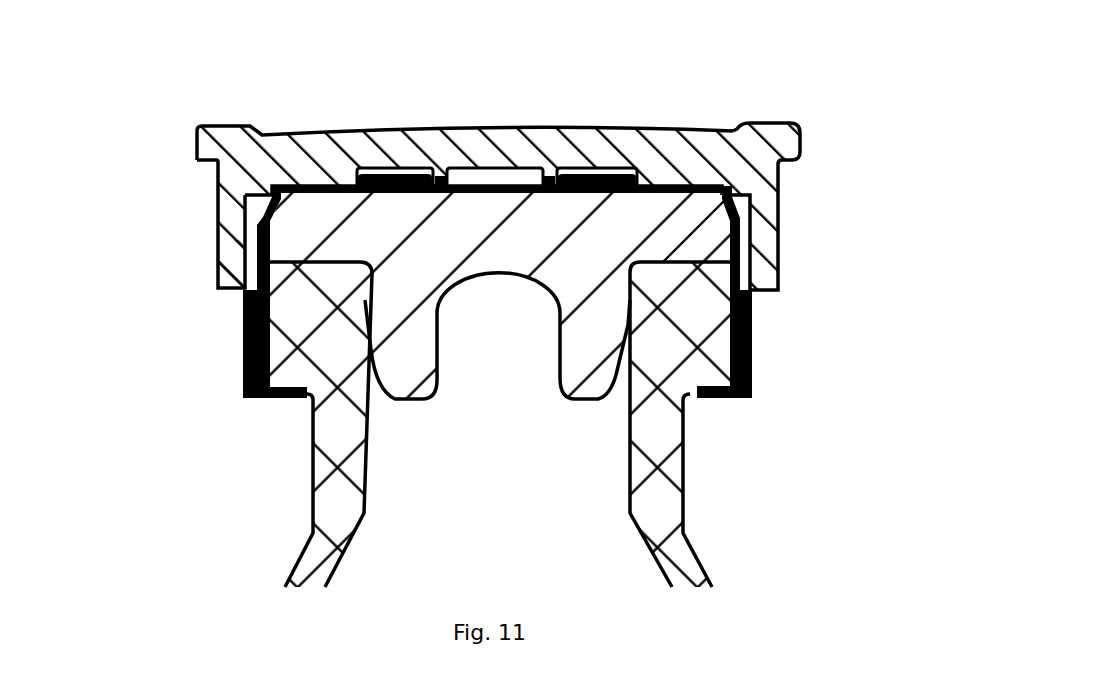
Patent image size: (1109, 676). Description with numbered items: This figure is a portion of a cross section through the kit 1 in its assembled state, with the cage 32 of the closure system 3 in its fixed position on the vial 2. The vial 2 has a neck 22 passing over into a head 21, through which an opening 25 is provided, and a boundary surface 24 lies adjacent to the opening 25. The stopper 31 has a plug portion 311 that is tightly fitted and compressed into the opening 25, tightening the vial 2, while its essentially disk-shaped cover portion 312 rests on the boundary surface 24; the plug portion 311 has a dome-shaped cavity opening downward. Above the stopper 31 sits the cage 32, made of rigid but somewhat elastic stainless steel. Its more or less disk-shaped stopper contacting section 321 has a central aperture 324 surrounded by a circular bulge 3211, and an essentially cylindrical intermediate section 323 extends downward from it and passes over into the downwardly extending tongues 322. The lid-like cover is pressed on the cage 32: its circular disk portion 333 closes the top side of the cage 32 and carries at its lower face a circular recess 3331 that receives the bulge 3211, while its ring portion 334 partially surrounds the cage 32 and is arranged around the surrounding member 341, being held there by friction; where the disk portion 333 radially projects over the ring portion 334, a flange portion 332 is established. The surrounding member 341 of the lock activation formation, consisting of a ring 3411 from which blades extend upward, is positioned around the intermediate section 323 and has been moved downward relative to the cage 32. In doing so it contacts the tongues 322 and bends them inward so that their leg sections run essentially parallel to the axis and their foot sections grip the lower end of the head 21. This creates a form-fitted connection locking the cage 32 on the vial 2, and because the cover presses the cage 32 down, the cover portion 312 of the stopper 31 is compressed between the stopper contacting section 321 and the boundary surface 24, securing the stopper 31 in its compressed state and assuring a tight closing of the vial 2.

The kit 1 is at (196, 385).
The vial 2 is at (295, 530).
The head 21 is at (312, 370).
The neck 22 is at (662, 502).
The boundary surface 24 is at (226, 255).
The opening 25 is at (590, 360).
The closure system 3 is at (321, 117).
The stopper 31 is at (513, 428).
The plug portion 311 is at (517, 350).
The cover portion 312 is at (700, 224).
The cage 32 is at (744, 261).
The stopper contacting section 321 is at (320, 188).
The bulge 3211 is at (388, 173).
The tongues 322 is at (255, 392).
The intermediate section 323 is at (249, 233).
The aperture 324 is at (484, 176).
The disk portion 333 is at (511, 140).
The recess 3331 is at (640, 172).
The flange portion 332 is at (787, 140).
The ring portion 334 is at (768, 233).
The surrounding member 341 is at (766, 327).
The ring 3411 is at (750, 365).